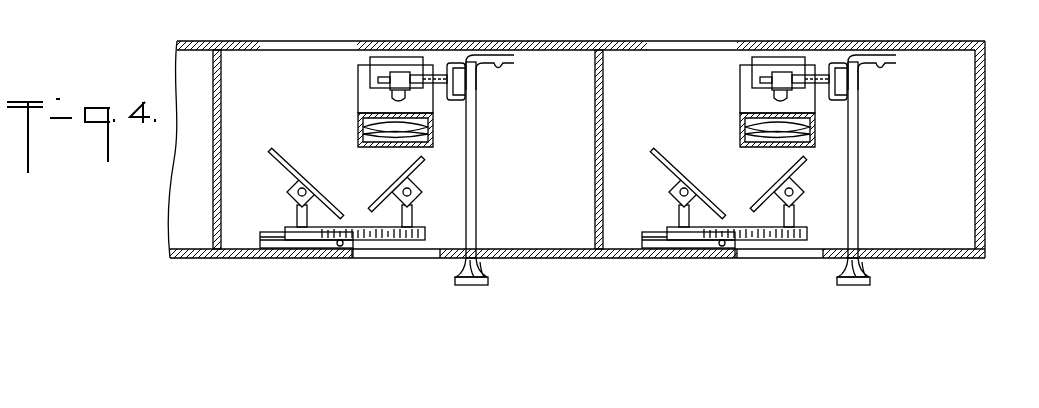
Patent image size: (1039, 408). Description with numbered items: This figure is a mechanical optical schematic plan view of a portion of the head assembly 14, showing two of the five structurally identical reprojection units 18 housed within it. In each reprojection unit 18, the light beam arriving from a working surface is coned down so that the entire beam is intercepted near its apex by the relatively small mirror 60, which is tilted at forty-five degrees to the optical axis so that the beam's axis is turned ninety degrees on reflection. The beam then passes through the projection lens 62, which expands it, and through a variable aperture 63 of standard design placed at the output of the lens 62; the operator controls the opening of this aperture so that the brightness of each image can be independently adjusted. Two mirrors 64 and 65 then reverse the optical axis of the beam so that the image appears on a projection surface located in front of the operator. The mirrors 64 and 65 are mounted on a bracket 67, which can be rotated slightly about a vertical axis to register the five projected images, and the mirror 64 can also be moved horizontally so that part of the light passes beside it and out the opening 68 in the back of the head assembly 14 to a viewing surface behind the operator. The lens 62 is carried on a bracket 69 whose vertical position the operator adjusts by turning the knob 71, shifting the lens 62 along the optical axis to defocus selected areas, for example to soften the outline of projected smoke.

The head assembly 14 is at (997, 127).
The reprojection unit 18 is at (262, 68).
The mirror 60 is at (365, 97).
The projection lens 62 is at (368, 123).
The variable aperture 63 is at (385, 148).
The mirror 64 is at (405, 172).
The mirror 65 is at (277, 148).
The bracket 67 is at (423, 232).
The opening 68 is at (387, 255).
The bracket 69 is at (433, 78).
The knob 71 is at (453, 275).